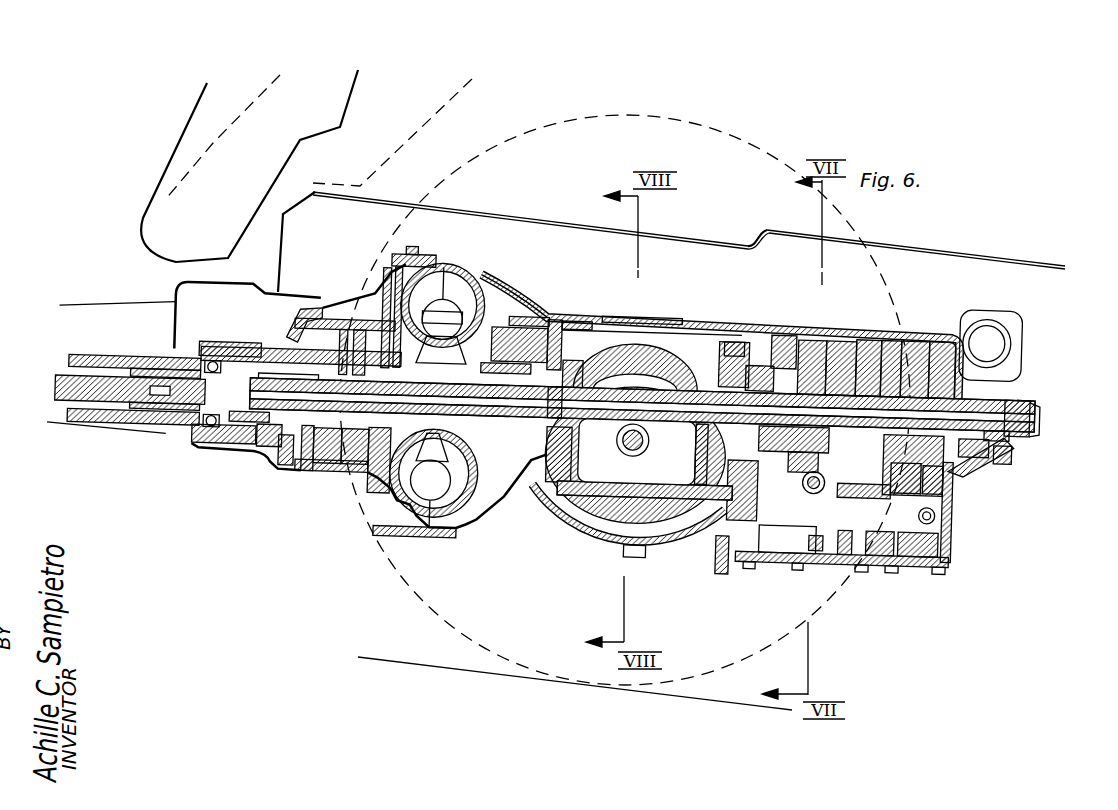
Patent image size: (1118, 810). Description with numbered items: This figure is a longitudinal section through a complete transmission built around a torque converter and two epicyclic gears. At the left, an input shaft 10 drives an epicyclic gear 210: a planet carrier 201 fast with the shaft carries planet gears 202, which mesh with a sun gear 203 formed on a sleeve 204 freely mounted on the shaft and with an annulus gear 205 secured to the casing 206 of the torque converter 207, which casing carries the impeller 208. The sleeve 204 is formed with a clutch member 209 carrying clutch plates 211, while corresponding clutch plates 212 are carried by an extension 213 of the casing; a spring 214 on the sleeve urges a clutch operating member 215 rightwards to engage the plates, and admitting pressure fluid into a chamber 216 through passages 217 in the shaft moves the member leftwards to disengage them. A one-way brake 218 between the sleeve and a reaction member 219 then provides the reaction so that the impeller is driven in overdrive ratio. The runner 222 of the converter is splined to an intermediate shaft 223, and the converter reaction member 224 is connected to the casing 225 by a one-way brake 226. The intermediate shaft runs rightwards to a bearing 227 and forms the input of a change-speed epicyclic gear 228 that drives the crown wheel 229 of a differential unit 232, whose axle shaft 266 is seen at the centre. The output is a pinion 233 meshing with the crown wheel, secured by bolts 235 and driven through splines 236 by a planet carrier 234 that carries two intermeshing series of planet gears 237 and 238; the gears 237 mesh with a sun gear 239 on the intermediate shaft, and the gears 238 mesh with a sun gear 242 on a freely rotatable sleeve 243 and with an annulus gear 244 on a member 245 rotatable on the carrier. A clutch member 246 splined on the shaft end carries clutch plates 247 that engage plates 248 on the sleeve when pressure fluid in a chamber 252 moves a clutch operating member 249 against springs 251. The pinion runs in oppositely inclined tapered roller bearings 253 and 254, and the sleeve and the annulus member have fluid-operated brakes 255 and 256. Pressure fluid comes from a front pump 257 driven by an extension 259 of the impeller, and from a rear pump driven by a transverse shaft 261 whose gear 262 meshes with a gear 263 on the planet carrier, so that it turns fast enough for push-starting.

The input shaft 10 is at (62, 376).
The planet carrier 201 is at (345, 480).
The planet gears 202 is at (394, 254).
The sun gear 203 is at (312, 392).
The sleeve 204 is at (226, 440).
The annulus gear 205 is at (360, 311).
The casing 206 is at (446, 262).
The torque converter 207 is at (452, 290).
The impeller 208 is at (505, 272).
The clutch member 209 is at (341, 311).
The epicyclic gear 210 is at (305, 470).
The clutch plates 211 is at (318, 374).
The clutch plates 212 is at (318, 311).
The extension 213 is at (355, 470).
The spring 214 is at (265, 440).
The clutch operating member 215 is at (285, 458).
The chamber 216 is at (310, 464).
The passages 217 is at (242, 418).
The one-way brake 218 is at (240, 337).
The reaction member 219 is at (212, 352).
The runner 222 is at (410, 250).
The intermediate shaft 223 is at (1015, 376).
The reaction member 224 is at (439, 397).
The casing 225 is at (575, 345).
The one-way brake 226 is at (498, 332).
The bearing 227 is at (1028, 443).
The change-speed epicyclic gear 228 is at (1008, 432).
The crown wheel 229 is at (628, 347).
The differential unit 232 is at (637, 300).
The pinion 233 is at (645, 459).
The planet carrier 234 is at (805, 320).
The bolts 235 is at (697, 440).
The splines 236 is at (778, 314).
The planet gears 237 is at (836, 330).
The planet gears 238 is at (883, 531).
The sun gear 239 is at (800, 450).
The sun gear 242 is at (832, 541).
The sleeve 243 is at (903, 316).
The annulus gear 244 is at (912, 531).
The member 245 is at (868, 320).
The clutch member 246 is at (985, 425).
The clutch plates 247 is at (1000, 292).
The clutch plates 248 is at (925, 316).
The clutch operating member 249 is at (955, 302).
The springs 251 is at (925, 452).
The chamber 252 is at (946, 452).
The tapered roller bearing 253 is at (745, 352).
The tapered roller bearing 254 is at (725, 322).
The fluid-operated brake 255 is at (940, 494).
The fluid-operated brake 256 is at (848, 531).
The front pump 257 is at (578, 303).
The extension 259 is at (530, 304).
The transverse shaft 261 is at (788, 528).
The gear 262 is at (820, 513).
The gear 263 is at (812, 470).
The axle shaft 266 is at (618, 424).